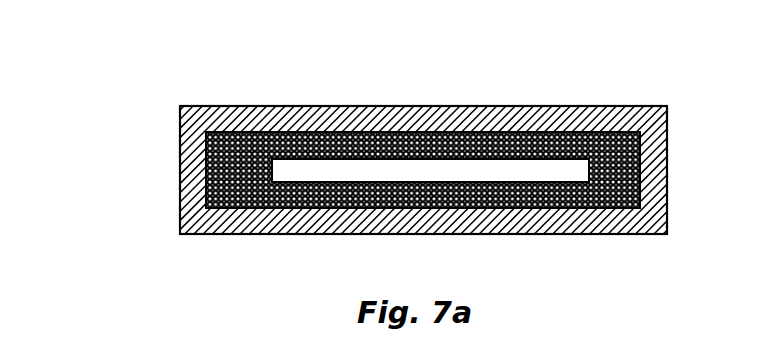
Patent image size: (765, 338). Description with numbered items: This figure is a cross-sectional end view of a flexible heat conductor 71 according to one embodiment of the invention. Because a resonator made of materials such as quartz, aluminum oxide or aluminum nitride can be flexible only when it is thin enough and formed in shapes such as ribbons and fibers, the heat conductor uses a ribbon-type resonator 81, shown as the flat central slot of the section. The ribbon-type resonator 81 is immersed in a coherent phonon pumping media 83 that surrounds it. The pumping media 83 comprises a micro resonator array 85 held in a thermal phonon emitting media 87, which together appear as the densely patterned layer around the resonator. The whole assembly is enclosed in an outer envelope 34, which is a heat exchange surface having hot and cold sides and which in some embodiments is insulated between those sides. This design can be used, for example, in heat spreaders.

The flexible heat conductor 71 is at (175, 70).
The envelope 34 is at (438, 112).
The thermal phonon emitting media 87 is at (205, 172).
The coherent phonon pumping media 83 is at (260, 134).
The micro resonator array 85 is at (263, 208).
The ribbon-type resonator 81 is at (555, 172).